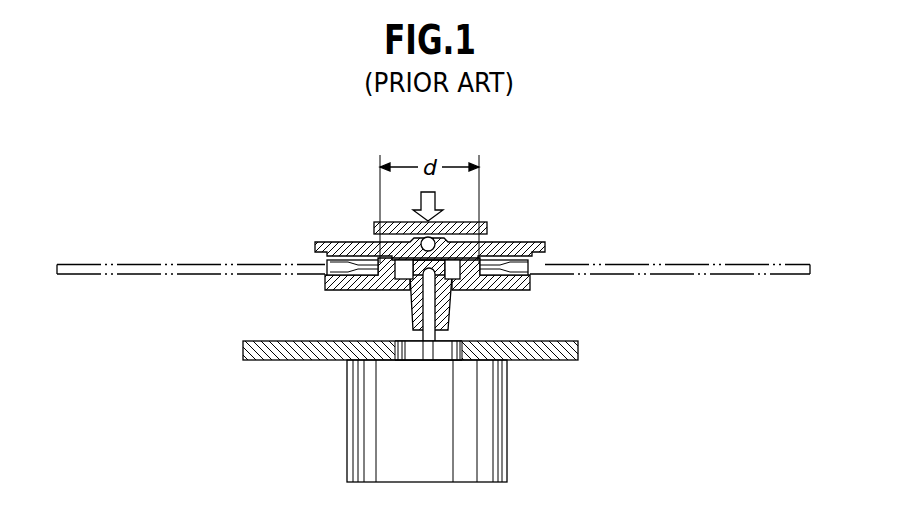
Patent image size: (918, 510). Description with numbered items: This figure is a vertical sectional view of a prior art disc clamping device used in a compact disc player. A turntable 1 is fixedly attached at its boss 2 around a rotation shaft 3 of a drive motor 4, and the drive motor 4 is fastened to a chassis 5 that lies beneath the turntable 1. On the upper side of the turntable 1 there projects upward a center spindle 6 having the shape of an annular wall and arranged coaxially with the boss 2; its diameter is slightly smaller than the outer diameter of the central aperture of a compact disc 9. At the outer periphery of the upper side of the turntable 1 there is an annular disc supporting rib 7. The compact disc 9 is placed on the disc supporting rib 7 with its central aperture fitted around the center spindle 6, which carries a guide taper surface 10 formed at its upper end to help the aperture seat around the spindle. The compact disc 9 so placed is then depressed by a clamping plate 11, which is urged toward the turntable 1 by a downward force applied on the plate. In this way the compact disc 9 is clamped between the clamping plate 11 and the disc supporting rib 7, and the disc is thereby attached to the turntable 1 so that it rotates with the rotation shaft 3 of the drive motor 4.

The turntable 1 is at (334, 285).
The boss 2 is at (410, 313).
The rotation shaft 3 is at (440, 334).
The drive motor 4 is at (507, 425).
The chassis 5 is at (556, 341).
The center spindle 6 is at (474, 255).
The disc supporting rib 7 is at (546, 264).
The compact disc 9 is at (676, 264).
The guide taper surface 10 is at (365, 268).
The clamping plate 11 is at (343, 242).